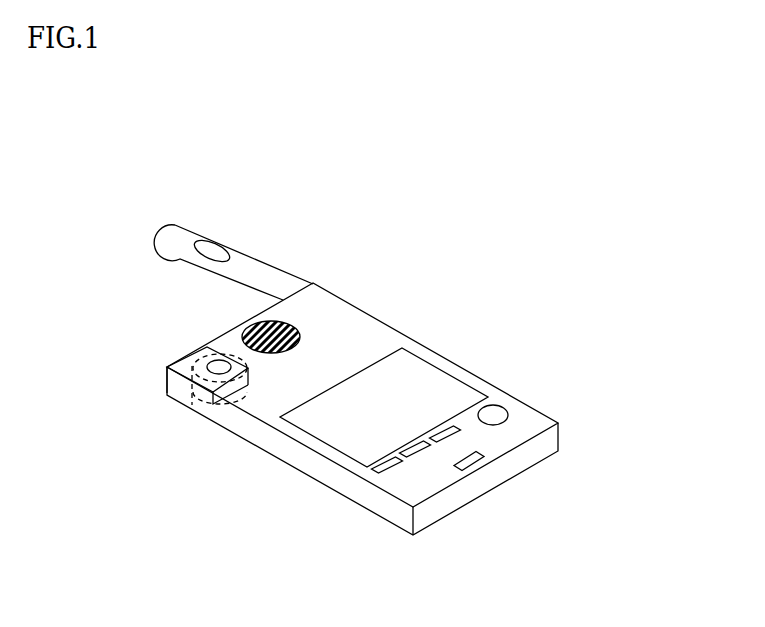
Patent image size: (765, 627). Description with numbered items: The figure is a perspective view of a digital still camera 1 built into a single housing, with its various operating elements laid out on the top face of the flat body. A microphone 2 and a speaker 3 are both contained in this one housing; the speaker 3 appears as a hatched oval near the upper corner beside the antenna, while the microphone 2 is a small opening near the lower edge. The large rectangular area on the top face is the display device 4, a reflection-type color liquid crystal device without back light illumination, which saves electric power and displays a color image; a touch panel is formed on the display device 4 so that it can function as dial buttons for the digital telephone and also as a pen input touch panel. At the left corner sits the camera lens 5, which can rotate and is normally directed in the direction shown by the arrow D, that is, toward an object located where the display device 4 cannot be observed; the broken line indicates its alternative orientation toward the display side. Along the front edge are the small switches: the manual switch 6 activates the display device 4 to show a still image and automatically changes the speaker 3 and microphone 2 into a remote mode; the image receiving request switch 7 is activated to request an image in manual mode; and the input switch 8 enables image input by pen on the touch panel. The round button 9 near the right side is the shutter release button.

The portable image transmitting device body 1 is at (360, 323).
The microphone 2 is at (470, 463).
The speaker 3 is at (246, 328).
The display device 4 is at (440, 377).
The camera lens 5 is at (200, 405).
The manual switch 6 is at (385, 472).
The image receiving request switch 7 is at (413, 453).
The input switch 8 is at (457, 430).
The shutter release button 9 is at (508, 413).
The direction of camera lens D is at (178, 388).